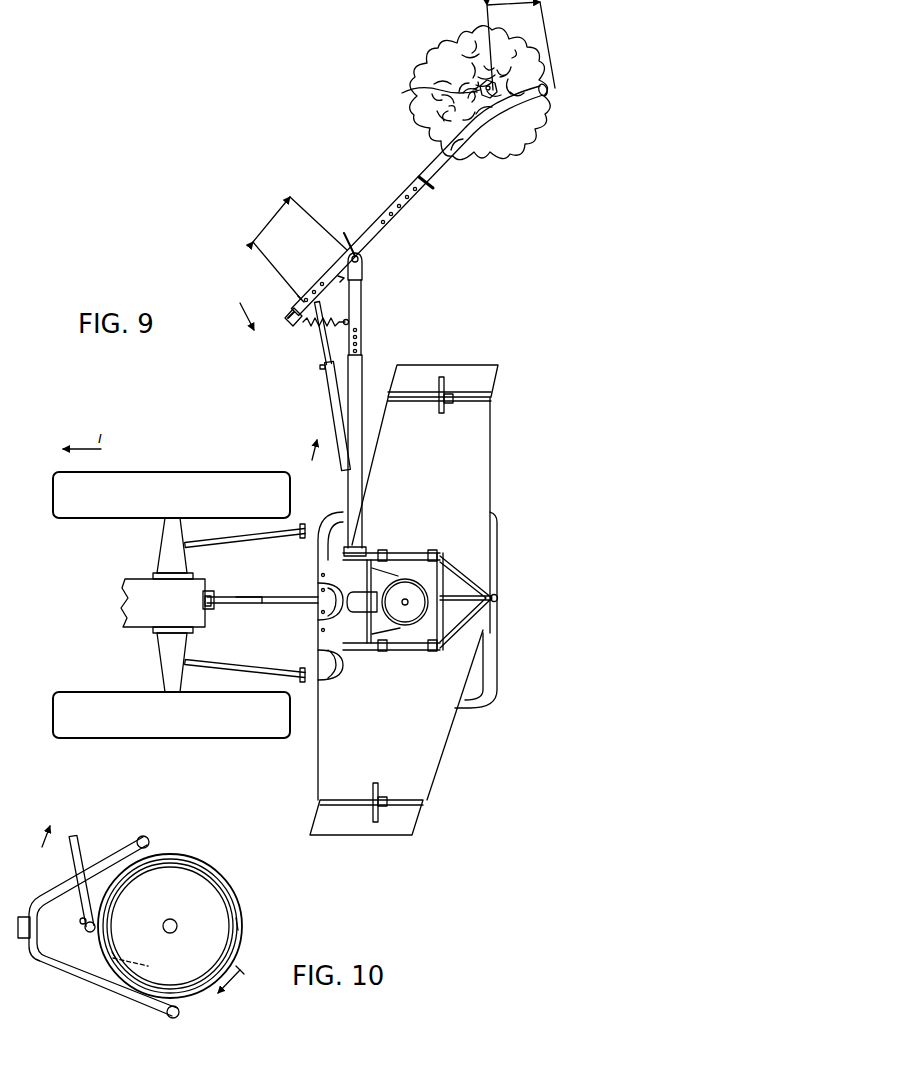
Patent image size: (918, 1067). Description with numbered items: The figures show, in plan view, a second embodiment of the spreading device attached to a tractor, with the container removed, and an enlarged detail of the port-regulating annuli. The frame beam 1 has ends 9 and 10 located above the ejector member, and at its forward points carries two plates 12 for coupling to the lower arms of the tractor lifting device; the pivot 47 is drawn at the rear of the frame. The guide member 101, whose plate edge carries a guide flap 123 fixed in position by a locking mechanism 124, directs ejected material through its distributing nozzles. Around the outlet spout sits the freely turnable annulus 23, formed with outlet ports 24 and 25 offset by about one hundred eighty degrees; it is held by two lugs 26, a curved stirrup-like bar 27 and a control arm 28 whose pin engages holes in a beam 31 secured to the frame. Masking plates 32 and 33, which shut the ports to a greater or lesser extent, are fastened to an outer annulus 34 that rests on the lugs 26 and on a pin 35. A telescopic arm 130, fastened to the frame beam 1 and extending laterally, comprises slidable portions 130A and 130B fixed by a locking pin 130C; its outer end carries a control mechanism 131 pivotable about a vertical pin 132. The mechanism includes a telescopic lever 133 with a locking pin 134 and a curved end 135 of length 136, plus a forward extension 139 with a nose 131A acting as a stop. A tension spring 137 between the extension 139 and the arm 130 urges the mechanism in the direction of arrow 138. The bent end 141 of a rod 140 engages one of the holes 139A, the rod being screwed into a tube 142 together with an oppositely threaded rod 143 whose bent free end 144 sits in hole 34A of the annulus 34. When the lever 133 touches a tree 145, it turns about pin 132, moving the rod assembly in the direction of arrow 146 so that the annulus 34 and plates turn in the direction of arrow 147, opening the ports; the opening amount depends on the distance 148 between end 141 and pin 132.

In FIG. 9, the frame beam 1 is at (500, 682).
In FIG. 9, the end of frame beam 9 is at (420, 650).
In FIG. 9, the end of frame beam 10 is at (410, 556).
In FIG. 9, the plates 12 is at (300, 538).
In FIG. 9, the annulus 23 is at (387, 601).
In FIG. 10, the annulus 23 is at (167, 867).
In FIG. 10, the outlet port 24 is at (141, 967).
In FIG. 10, the outlet port 25 is at (222, 868).
In FIG. 10, the lugs 26 is at (150, 841).
In FIG. 10, the curved stirrup-like bar 27 is at (85, 976).
In FIG. 9, the control arm 28 is at (322, 588).
In FIG. 10, the control arm 28 is at (22, 936).
In FIG. 9, the beam 31 is at (318, 612).
In FIG. 10, the masking plate 32 is at (119, 962).
In FIG. 10, the masking plate 33 is at (215, 874).
In FIG. 10, the annulus 34 is at (240, 950).
In FIG. 10, the hole 34A is at (80, 922).
In FIG. 10, the pin 35 is at (244, 920).
In FIG. 9, the pivot 47 is at (499, 597).
In FIG. 9, the guide member 101 is at (442, 768).
In FIG. 9, the guide flap 123 is at (493, 385).
In FIG. 9, the locking mechanism 124 is at (442, 376).
In FIG. 9, the telescopic arm 130 is at (384, 414).
In FIG. 9, the arm portion 130A is at (363, 498).
In FIG. 9, the arm portion 130B is at (362, 302).
In FIG. 9, the locking pin 130C is at (362, 357).
In FIG. 9, the control mechanism 131 is at (402, 196).
In FIG. 9, the nose 131A is at (342, 272).
In FIG. 9, the vertical pin 132 is at (364, 262).
In FIG. 9, the telescopic lever 133 is at (438, 165).
In FIG. 9, the locking pin 134 is at (436, 186).
In FIG. 9, the curved end 135 is at (549, 92).
In FIG. 9, the length 136 is at (521, 46).
In FIG. 9, the tension spring 137 is at (308, 325).
In FIG. 9, the arrow 138 is at (231, 315).
In FIG. 9, the extension 139 is at (295, 310).
In FIG. 9, the holes 139A is at (338, 280).
In FIG. 9, the rod 140 is at (320, 352).
In FIG. 9, the bent end 141 is at (302, 290).
In FIG. 9, the tube 142 is at (323, 375).
In FIG. 9, the rod 143 is at (366, 546).
In FIG. 10, the rod 143 is at (80, 842).
In FIG. 10, the free end 144 is at (89, 931).
In FIG. 9, the tree 145 is at (414, 90).
In FIG. 9, the arrow 146 is at (296, 450).
In FIG. 10, the arrow 146 is at (31, 834).
In FIG. 10, the arrow 147 is at (247, 980).
In FIG. 9, the distance 148 is at (282, 213).